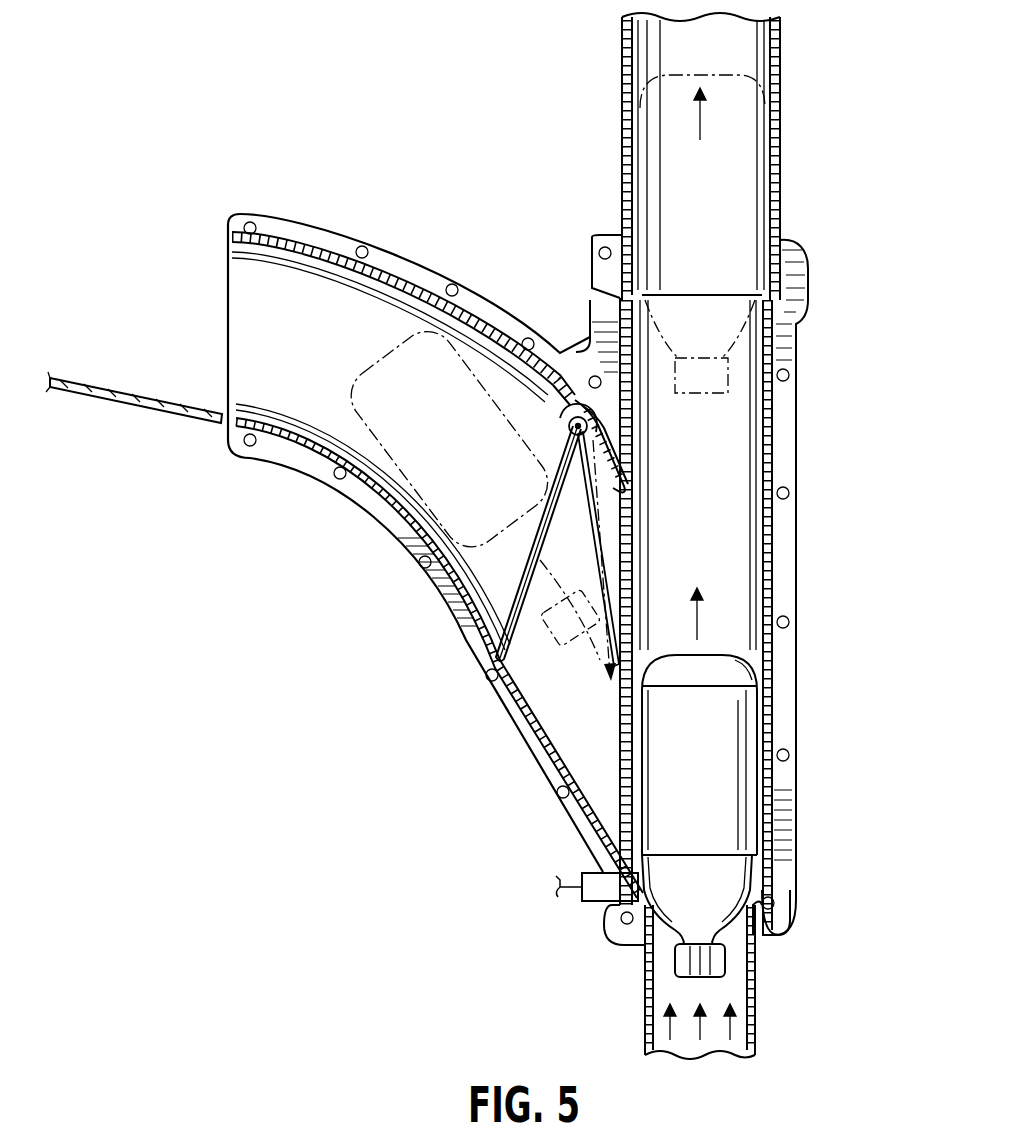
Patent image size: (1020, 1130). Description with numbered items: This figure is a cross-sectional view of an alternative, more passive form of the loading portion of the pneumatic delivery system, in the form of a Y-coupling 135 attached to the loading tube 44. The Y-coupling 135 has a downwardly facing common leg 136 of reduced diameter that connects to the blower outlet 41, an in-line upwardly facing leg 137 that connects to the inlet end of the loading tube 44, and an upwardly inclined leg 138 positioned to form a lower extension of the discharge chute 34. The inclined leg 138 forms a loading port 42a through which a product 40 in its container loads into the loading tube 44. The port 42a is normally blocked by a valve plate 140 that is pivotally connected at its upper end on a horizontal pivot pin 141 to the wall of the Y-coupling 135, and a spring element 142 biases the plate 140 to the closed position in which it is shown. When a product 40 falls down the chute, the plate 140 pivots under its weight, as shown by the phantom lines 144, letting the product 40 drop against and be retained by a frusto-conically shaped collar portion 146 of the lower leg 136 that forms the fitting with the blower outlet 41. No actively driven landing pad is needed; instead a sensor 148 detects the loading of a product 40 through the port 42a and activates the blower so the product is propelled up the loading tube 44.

The tapered chute 34 is at (84, 384).
The product 40 is at (372, 368).
The blower outlet 41 is at (757, 1030).
The loading port 42a is at (240, 302).
The loading tube 44 is at (783, 132).
The Y-coupling 135 is at (903, 240).
The common leg 136 is at (770, 930).
The in-line upwardly facing leg 137 is at (745, 465).
The upwardly inclined leg 138 is at (345, 232).
The valve plate 140 is at (538, 552).
The pivot pin 141 is at (565, 428).
The spring element 142 is at (560, 435).
The phantom lines 144 is at (612, 560).
The frusto-conically shaped collar portion 146 is at (772, 892).
The sensor 148 is at (605, 902).